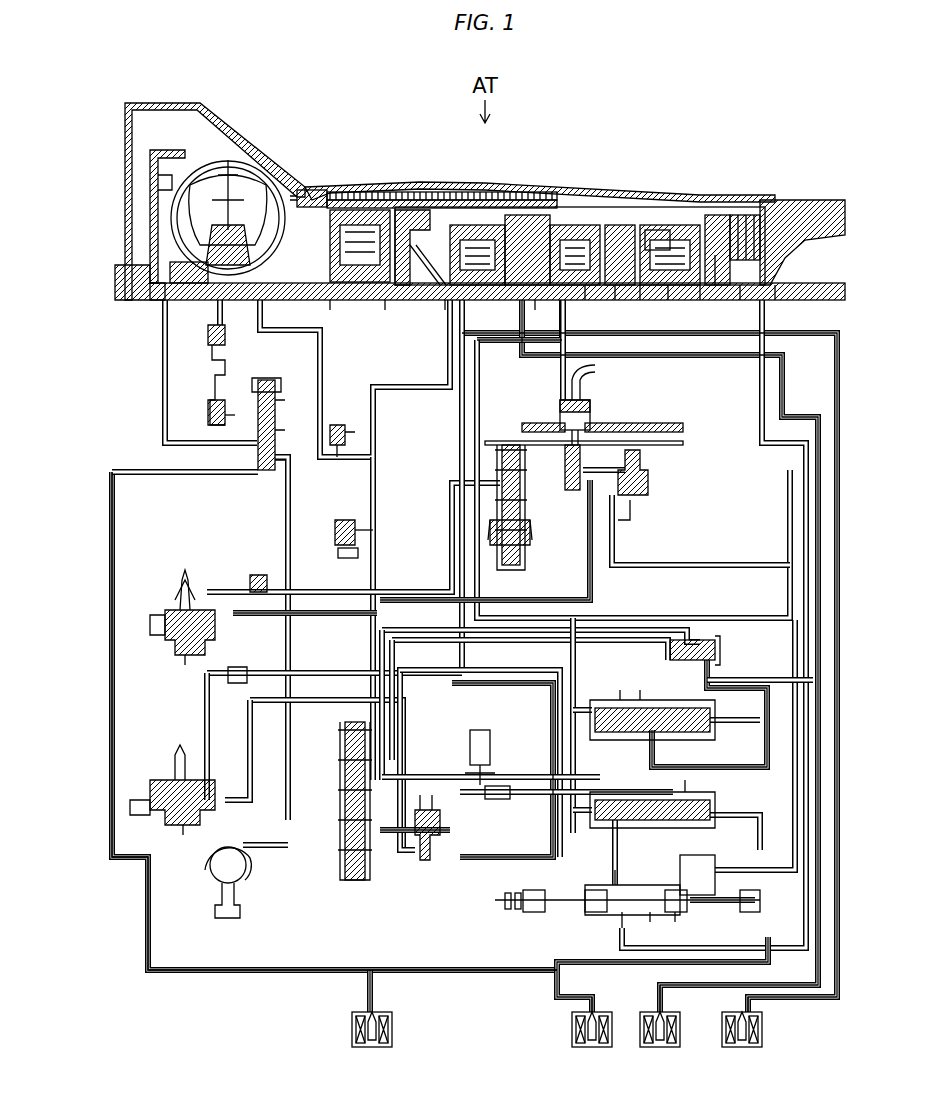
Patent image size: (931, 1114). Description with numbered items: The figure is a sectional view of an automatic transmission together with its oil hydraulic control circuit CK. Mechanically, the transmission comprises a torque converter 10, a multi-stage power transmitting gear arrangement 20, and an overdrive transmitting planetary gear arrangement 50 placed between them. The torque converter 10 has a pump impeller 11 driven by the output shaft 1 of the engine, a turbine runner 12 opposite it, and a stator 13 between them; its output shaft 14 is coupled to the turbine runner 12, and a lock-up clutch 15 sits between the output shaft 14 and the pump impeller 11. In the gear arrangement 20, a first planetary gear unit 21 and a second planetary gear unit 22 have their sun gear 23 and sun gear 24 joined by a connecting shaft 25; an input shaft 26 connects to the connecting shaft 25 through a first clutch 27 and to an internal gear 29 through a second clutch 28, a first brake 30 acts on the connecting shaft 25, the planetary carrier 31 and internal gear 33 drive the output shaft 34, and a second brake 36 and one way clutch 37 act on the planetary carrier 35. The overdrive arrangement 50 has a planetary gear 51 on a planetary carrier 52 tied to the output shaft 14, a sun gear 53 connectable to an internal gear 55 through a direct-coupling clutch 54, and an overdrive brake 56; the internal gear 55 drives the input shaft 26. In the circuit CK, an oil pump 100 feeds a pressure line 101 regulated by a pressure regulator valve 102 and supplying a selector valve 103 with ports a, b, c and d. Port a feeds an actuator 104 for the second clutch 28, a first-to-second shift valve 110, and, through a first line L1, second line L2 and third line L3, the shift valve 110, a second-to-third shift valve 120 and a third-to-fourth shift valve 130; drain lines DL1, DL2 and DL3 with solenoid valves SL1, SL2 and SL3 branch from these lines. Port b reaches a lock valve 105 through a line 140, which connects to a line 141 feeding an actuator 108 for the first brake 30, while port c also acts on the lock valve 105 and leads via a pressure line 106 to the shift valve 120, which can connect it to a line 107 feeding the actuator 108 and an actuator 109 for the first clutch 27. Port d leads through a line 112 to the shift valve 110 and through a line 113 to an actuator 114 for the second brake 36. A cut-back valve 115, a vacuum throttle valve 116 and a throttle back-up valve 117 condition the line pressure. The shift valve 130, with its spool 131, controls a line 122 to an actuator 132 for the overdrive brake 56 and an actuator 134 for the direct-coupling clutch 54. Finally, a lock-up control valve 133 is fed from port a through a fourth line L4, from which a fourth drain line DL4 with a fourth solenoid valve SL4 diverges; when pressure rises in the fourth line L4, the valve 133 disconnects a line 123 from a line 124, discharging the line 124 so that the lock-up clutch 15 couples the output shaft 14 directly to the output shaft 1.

The output shaft of the engine 1 is at (130, 300).
The torque converter 10 is at (255, 170).
The pump impeller 11 is at (265, 180).
The turbine runner 12 is at (196, 170).
The stator 13 is at (240, 235).
The output shaft of the torque converter 14 is at (185, 300).
The lock-up clutch 15 is at (160, 185).
The multi-stage power transmitting gear arrangement 20 is at (623, 198).
The first planetary gear unit 21 is at (630, 225).
The second planetary gear unit 22 is at (718, 215).
The sun gear of the first planetary gear unit 23 is at (640, 300).
The sun gear of the second planetary gear unit 24 is at (700, 300).
The connecting shaft 25 is at (668, 300).
The input shaft 26 is at (535, 300).
The first clutch 27 is at (500, 225).
The second clutch 28 is at (575, 225).
The internal gear 29 is at (665, 225).
The first brake 30 is at (535, 215).
The planetary carrier 31 is at (615, 300).
The internal gear of the second planetary gear unit 33 is at (748, 215).
The output shaft 34 is at (715, 285).
The planetary carrier of the second planetary gear unit 35 is at (672, 230).
The second brake 36 is at (775, 212).
The one way clutch 37 is at (740, 300).
The overdrive transmitting planetary gear arrangement 50 is at (395, 192).
The planetary gear 51 is at (325, 190).
The planetary carrier 52 is at (388, 300).
The sun gear 53 is at (350, 300).
The direct-coupling clutch 54 is at (450, 190).
The internal gear 55 is at (370, 192).
The overdrive brake 56 is at (435, 192).
The oil pump 100 is at (212, 880).
The pressure line 101 is at (440, 600).
The pressure regulator valve 102 is at (328, 862).
The selector valve 103 is at (522, 900).
The actuator for the second clutch 104 is at (585, 300).
The lock valve 105 is at (434, 787).
The pressure line 106 is at (530, 790).
The line 107 is at (555, 828).
The actuator for the first brake 108 is at (166, 828).
The actuator for the first clutch 109 is at (518, 340).
The 1-2 shift valve 110 is at (625, 732).
The line 112 is at (765, 872).
The line 113 is at (718, 767).
The actuator for the second brake 114 is at (775, 300).
The cut-back valve 115 is at (712, 642).
The vacuum throttle valve 116 is at (594, 440).
The throttle back-up valve 117 is at (658, 461).
The 2-3 shift valve 120 is at (650, 800).
The line 122 is at (440, 497).
The line 123 is at (300, 645).
The line 124 is at (153, 390).
The 3-4 shift valve 130 is at (504, 432).
The spool of the 3-4 shift valve 131 is at (525, 512).
The actuator for the overdrive brake 132 is at (166, 670).
The lock-up control valve 133 is at (281, 375).
The actuator for the direct-coupling clutch 134 is at (445, 305).
The line 140 is at (480, 830).
The line 141 is at (395, 765).
The oil hydraulic control circuit CK is at (145, 434).
The port a is at (645, 919).
The port b is at (616, 884).
The port c is at (613, 921).
The port d is at (671, 918).
The first line L1 is at (768, 962).
The second line L2 is at (803, 985).
The third line L3 is at (837, 997).
The fourth line L4 is at (205, 972).
The first drain line DL1 is at (590, 998).
The second drain line DL2 is at (650, 1012).
The third drain line DL3 is at (748, 1000).
The fourth drain line DL4 is at (372, 992).
The first solenoid valve SL1 is at (572, 1026).
The second solenoid valve SL2 is at (680, 1025).
The third solenoid valve SL3 is at (762, 1028).
The fourth solenoid valve SL4 is at (392, 1025).